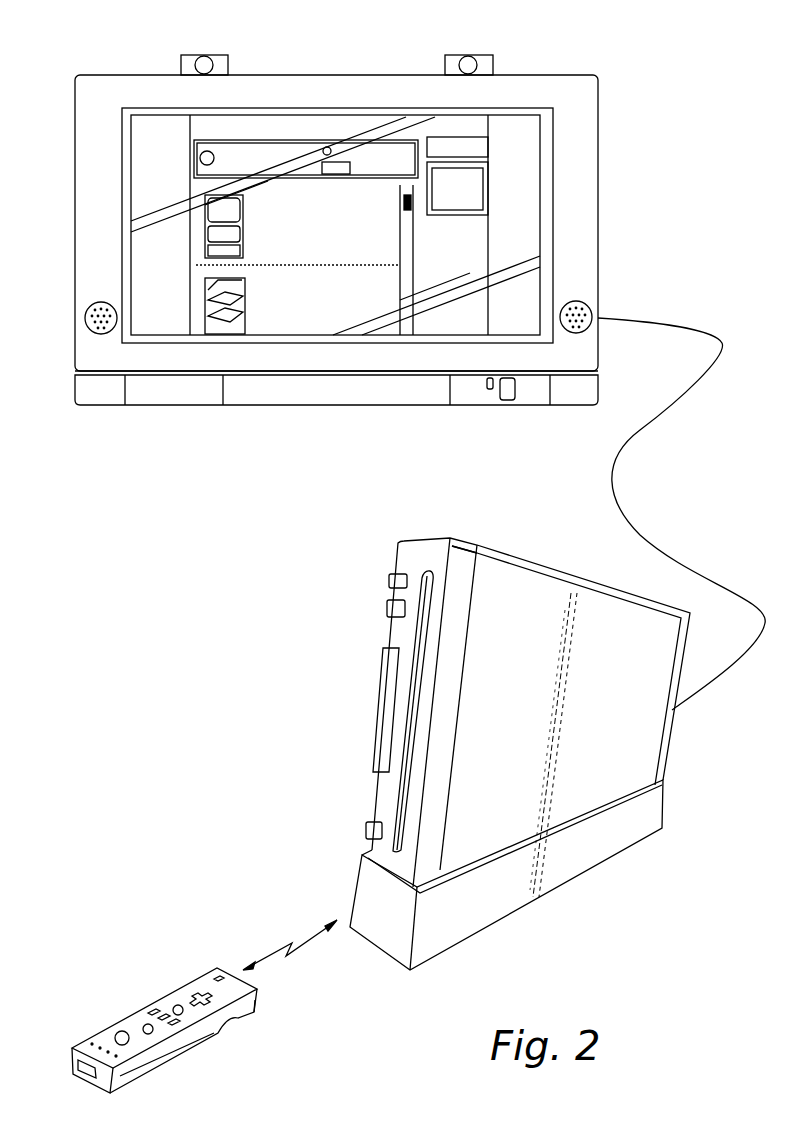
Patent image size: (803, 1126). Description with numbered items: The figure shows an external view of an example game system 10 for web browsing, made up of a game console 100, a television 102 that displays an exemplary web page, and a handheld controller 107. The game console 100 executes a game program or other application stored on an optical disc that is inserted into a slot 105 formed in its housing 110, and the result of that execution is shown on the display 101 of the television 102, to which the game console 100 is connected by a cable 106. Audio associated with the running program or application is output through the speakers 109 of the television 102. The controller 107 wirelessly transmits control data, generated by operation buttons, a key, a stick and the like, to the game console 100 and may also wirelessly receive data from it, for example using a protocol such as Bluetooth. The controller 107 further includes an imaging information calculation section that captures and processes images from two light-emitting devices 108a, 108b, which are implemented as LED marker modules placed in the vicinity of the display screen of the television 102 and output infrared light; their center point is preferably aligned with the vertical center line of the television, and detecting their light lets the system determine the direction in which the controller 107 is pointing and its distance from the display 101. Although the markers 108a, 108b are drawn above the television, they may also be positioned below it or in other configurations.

The game system 10 is at (283, 665).
The game console 100 is at (540, 722).
The display 101 is at (181, 174).
The television 102 is at (610, 199).
The slot 105 is at (415, 575).
The cable 106 is at (630, 502).
The controller 107 is at (262, 998).
The light-emitting device 108a is at (221, 59).
The light-emitting device 108b is at (482, 59).
The speakers 109 is at (84, 326).
The housing 110 is at (530, 560).